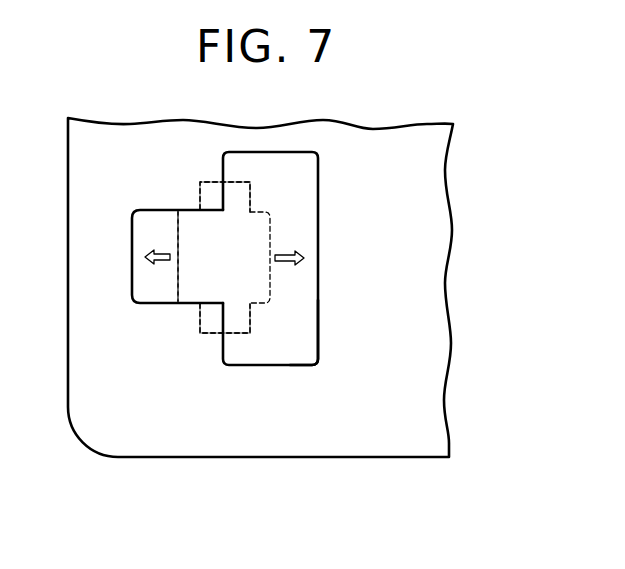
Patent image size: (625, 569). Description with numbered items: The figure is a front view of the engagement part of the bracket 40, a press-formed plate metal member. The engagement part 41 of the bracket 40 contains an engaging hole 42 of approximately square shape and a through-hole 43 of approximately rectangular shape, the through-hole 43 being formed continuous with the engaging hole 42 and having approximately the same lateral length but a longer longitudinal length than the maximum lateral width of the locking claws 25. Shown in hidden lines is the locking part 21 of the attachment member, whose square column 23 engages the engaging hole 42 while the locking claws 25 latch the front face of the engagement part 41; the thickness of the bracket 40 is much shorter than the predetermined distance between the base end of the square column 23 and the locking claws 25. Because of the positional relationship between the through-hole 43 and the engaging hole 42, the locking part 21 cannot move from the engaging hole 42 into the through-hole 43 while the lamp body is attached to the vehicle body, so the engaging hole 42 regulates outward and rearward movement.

The bracket 40 is at (272, 457).
The engagement part 41 is at (222, 355).
The engaging hole 42 is at (132, 296).
The through-hole 43 is at (315, 364).
The locking part 21 is at (178, 274).
The square column 23 is at (192, 234).
The locking claws 25 is at (201, 198).